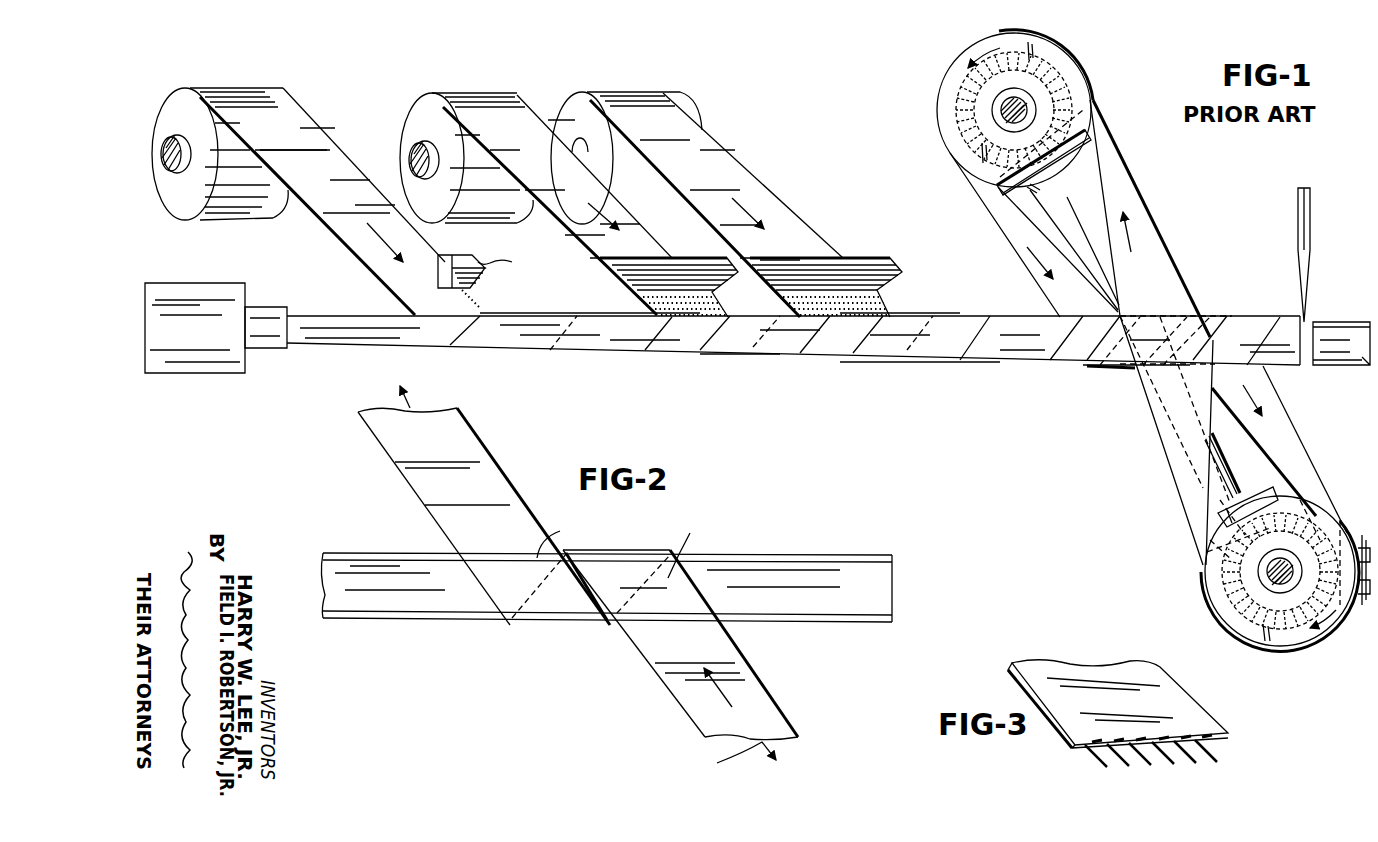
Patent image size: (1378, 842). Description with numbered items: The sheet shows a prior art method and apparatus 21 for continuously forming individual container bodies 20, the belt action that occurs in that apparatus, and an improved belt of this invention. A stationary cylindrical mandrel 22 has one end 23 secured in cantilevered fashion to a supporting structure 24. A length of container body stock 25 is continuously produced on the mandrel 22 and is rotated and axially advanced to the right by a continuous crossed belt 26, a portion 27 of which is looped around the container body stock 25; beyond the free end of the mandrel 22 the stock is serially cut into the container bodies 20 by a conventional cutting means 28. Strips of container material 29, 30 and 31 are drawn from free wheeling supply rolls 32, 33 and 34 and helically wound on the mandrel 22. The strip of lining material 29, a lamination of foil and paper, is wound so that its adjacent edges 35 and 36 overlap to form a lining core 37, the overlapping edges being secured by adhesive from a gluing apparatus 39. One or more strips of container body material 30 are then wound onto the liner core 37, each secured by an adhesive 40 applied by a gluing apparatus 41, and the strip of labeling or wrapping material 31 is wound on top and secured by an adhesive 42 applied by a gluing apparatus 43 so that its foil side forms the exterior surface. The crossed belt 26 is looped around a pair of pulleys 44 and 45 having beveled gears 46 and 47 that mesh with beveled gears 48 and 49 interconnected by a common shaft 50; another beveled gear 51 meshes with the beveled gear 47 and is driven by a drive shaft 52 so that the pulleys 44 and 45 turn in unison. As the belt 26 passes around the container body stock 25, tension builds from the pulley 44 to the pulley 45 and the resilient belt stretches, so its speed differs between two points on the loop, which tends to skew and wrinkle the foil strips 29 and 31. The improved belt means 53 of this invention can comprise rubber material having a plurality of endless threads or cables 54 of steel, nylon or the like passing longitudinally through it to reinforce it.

In FIG. 1, the container bodies 20 is at (1333, 325).
In FIG. 1, the prior art method and apparatus 21 is at (842, 140).
In FIG. 1, the mandrel 22 is at (350, 320).
In FIG. 1, the end of mandrel 23 is at (292, 348).
In FIG. 1, the supporting structure 24 is at (196, 368).
In FIG. 1, the container body stock 25 is at (995, 353).
In FIG. 2, the container body stock 25 is at (397, 612).
In FIG. 1, the crossed belt 26 is at (1158, 257).
In FIG. 2, the crossed belt 26 is at (422, 480).
In FIG. 1, the portion of belt 27 is at (1117, 362).
In FIG. 2, the portion of belt 27 is at (615, 627).
In FIG. 1, the cutting means 28 is at (1310, 235).
In FIG. 1, the strip of lining material 29 is at (303, 138).
In FIG. 1, the strip of container body material 30 is at (530, 138).
In FIG. 1, the strip of labeling or wrapping material 31 is at (703, 150).
In FIG. 1, the supply roll 32 is at (189, 98).
In FIG. 1, the supply roll 33 is at (412, 108).
In FIG. 1, the supply roll 34 is at (592, 100).
In FIG. 1, the edge of strip 35 is at (427, 246).
In FIG. 1, the edge of strip 36 is at (343, 248).
In FIG. 1, the lining core 37 is at (540, 350).
In FIG. 1, the gluing apparatus 39 is at (507, 264).
In FIG. 1, the adhesive 40 is at (637, 308).
In FIG. 1, the gluing apparatus 41 is at (687, 265).
In FIG. 1, the adhesive 42 is at (873, 302).
In FIG. 1, the gluing apparatus 43 is at (870, 272).
In FIG. 1, the pulley 44 is at (950, 153).
In FIG. 1, the pulley 45 is at (1290, 642).
In FIG. 1, the beveled gear 46 is at (946, 93).
In FIG. 1, the beveled gear 47 is at (1232, 582).
In FIG. 1, the beveled gear 48 is at (1095, 103).
In FIG. 1, the beveled gear 49 is at (1207, 538).
In FIG. 1, the common shaft 50 is at (1233, 477).
In FIG. 1, the beveled gear 51 is at (1321, 527).
In FIG. 1, the drive shaft 52 is at (1366, 560).
In FIG. 3, the improved belt means 53 is at (1077, 670).
In FIG. 3, the endless threads or cables 54 is at (1205, 762).